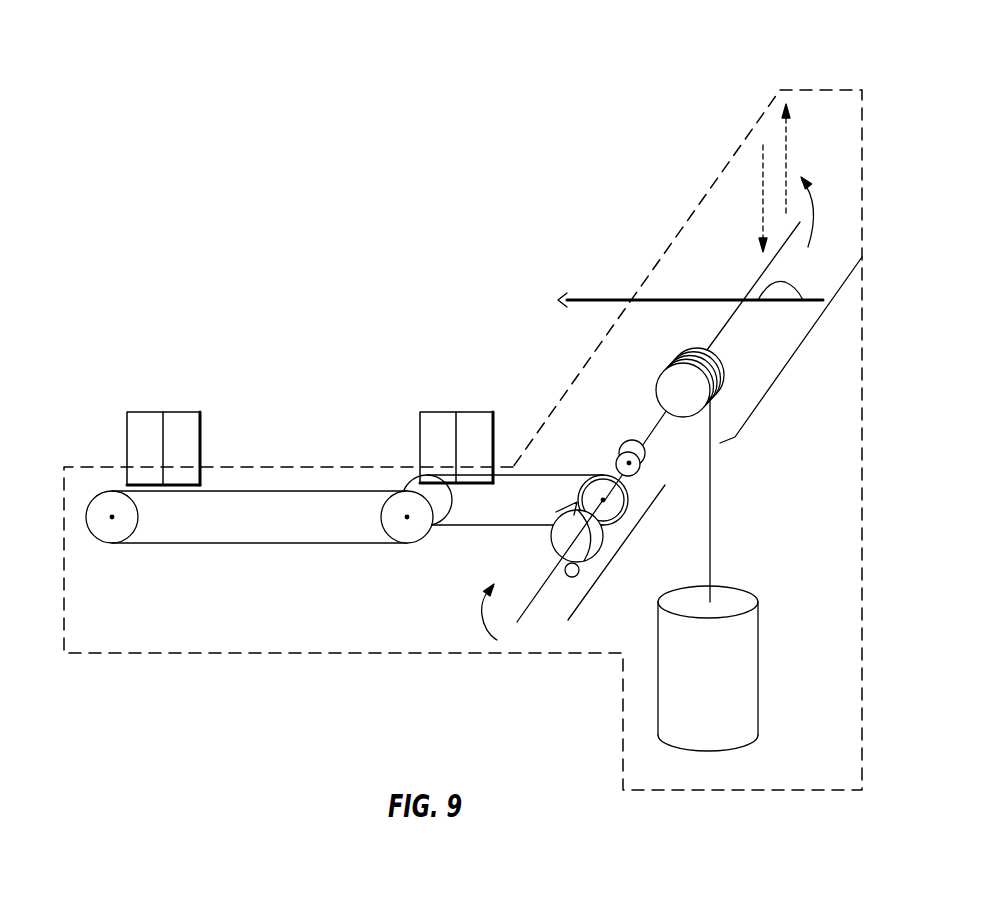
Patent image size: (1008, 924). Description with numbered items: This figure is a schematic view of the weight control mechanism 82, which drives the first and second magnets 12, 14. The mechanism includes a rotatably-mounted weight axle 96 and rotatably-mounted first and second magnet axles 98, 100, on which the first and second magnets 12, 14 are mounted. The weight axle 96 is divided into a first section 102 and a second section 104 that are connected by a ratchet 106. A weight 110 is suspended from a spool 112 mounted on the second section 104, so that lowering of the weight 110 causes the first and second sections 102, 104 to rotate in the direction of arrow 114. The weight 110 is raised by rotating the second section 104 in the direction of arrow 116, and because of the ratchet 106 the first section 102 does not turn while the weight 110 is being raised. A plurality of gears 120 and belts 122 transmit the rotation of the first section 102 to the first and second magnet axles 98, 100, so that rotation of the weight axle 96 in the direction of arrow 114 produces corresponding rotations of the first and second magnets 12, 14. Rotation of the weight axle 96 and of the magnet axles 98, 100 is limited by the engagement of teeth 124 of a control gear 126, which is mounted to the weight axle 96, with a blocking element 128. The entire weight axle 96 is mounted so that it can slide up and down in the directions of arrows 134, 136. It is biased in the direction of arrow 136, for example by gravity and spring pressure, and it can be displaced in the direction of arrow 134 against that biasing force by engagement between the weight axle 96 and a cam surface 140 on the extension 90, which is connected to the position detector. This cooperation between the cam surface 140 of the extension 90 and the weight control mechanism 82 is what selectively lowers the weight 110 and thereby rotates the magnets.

The weight control mechanism 82 is at (60, 546).
The extension 90 is at (660, 297).
The cam surface 140 is at (765, 287).
The first magnet 12 is at (187, 423).
The first magnet axle 98 is at (189, 413).
The second magnet 14 is at (425, 430).
The second magnet axle 100 is at (483, 413).
The belts 122 is at (242, 544).
The gears 120 is at (108, 533).
The control gear 126 is at (558, 540).
The teeth 124 is at (565, 511).
The blocking element 128 is at (571, 578).
The arrow 114 is at (478, 610).
The first section 102 is at (623, 558).
The ratchet 106 is at (630, 450).
The spool 112 is at (672, 366).
The weight axle 96 is at (736, 314).
The second section 104 is at (798, 348).
The weight 110 is at (747, 662).
The arrow 136 is at (762, 157).
The arrow 134 is at (788, 138).
The arrow 116 is at (812, 227).